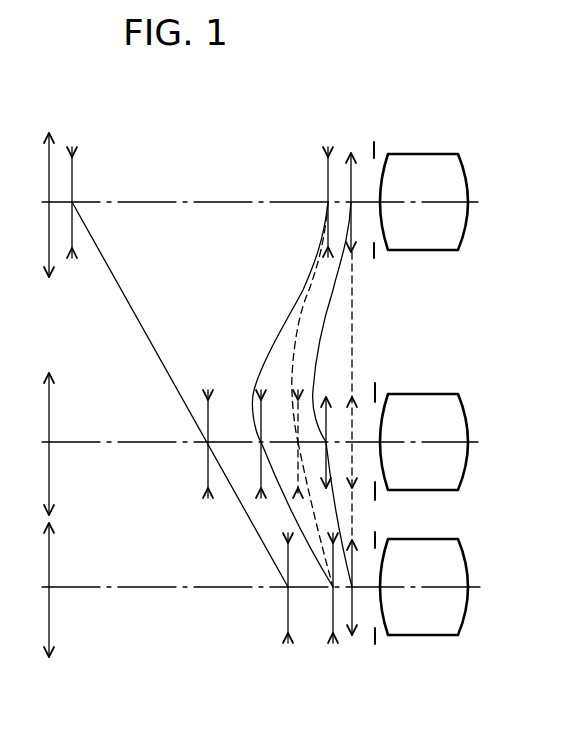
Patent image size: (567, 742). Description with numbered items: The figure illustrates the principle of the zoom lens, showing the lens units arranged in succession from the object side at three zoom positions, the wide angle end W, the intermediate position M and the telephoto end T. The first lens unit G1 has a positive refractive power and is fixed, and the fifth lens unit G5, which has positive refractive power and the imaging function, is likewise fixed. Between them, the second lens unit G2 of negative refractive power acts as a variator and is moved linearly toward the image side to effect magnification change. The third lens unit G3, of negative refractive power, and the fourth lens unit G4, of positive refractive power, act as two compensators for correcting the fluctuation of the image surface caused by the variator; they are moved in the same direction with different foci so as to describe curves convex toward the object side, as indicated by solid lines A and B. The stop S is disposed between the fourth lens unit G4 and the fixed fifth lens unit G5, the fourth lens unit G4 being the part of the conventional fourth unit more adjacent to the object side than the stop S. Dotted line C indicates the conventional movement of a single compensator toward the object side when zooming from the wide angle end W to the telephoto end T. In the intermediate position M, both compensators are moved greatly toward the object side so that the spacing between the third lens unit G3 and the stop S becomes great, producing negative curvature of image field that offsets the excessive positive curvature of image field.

The first lens unit G1 is at (63, 673).
The second lens unit G2 is at (73, 147).
The third lens unit G3 is at (340, 667).
The fourth lens unit G4 is at (377, 666).
The fifth lens unit G5 is at (448, 666).
The stop S is at (373, 142).
The solid line A is at (268, 355).
The solid line B is at (319, 331).
The dotted line C is at (352, 348).
The wide angle end W is at (275, 202).
The intermediate position M is at (274, 443).
The telephoto end T is at (274, 587).